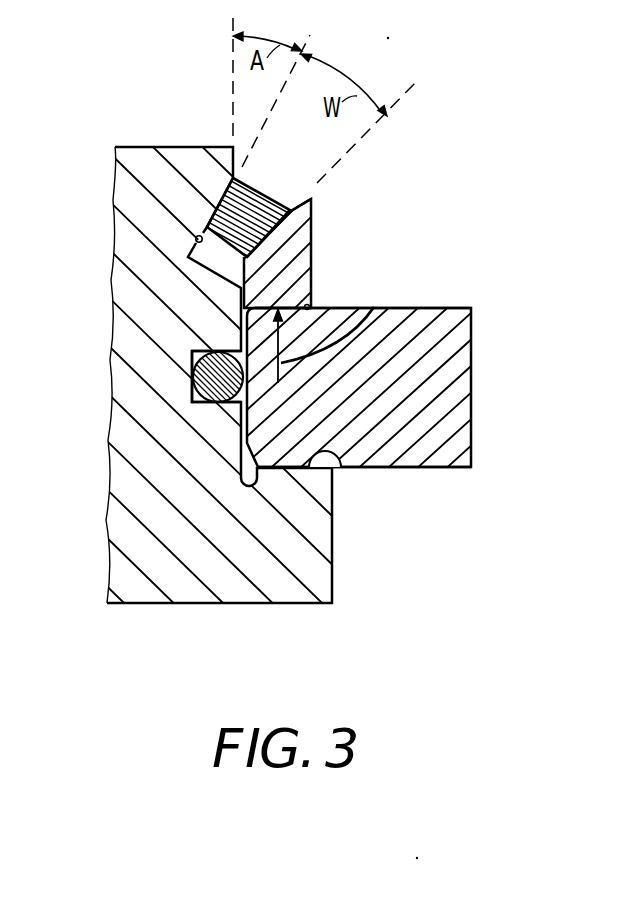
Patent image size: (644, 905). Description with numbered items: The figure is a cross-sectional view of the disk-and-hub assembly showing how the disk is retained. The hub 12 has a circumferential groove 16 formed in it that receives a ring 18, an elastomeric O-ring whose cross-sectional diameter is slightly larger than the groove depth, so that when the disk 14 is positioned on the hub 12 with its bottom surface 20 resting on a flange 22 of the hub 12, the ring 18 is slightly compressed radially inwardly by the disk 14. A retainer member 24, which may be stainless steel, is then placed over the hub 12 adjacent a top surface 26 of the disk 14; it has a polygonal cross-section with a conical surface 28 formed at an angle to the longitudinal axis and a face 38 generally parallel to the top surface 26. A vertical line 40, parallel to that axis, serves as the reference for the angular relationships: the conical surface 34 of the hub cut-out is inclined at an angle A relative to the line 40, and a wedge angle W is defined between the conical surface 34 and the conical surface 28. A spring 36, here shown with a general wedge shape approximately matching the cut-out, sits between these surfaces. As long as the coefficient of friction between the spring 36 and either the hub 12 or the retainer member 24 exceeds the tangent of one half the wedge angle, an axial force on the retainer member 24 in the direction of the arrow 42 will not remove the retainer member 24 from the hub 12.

The hub 12 is at (123, 280).
The disk 14 is at (472, 372).
The circumferential groove 16 is at (190, 353).
The ring 18 is at (191, 403).
The bottom surface 20 is at (408, 470).
The flange 22 is at (343, 470).
The retainer member 24 is at (312, 238).
The top surface 26 is at (356, 308).
The conical surface 28 is at (296, 206).
The conical surface 34 is at (196, 240).
The spring 36 is at (252, 172).
The face 38 is at (312, 306).
The vertical line 40 is at (232, 85).
The arrow 42 is at (373, 307).